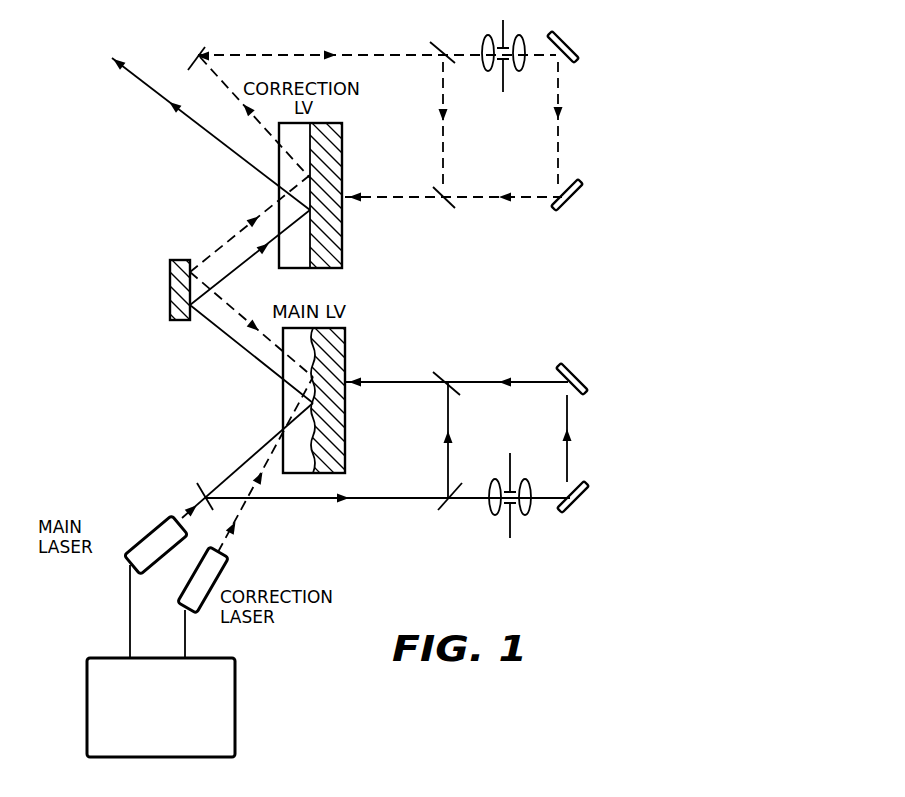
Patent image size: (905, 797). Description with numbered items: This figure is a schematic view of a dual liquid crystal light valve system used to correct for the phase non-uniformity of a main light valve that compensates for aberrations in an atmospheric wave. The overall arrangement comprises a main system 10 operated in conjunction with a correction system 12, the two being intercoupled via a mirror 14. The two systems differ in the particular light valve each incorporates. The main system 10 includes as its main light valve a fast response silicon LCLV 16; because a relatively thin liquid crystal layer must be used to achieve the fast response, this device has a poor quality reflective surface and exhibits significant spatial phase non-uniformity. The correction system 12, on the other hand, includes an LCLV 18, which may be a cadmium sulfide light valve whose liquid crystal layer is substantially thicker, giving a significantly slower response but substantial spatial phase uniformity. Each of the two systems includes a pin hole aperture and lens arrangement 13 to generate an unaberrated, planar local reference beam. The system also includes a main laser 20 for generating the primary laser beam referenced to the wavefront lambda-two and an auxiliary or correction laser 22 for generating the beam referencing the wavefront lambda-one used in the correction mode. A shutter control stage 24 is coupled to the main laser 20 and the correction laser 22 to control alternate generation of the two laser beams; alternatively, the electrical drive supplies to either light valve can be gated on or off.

The main system 10 is at (492, 347).
The correction system 12 is at (478, 34).
The pin hole aperture and lens arrangement 13 is at (518, 32).
The mirror 14 is at (178, 260).
The fast response silicon LCLV 16 is at (346, 352).
The LCLV 18 is at (343, 150).
The main laser 20 is at (158, 520).
The correction laser 22 is at (231, 575).
The shutter control stage 24 is at (104, 637).